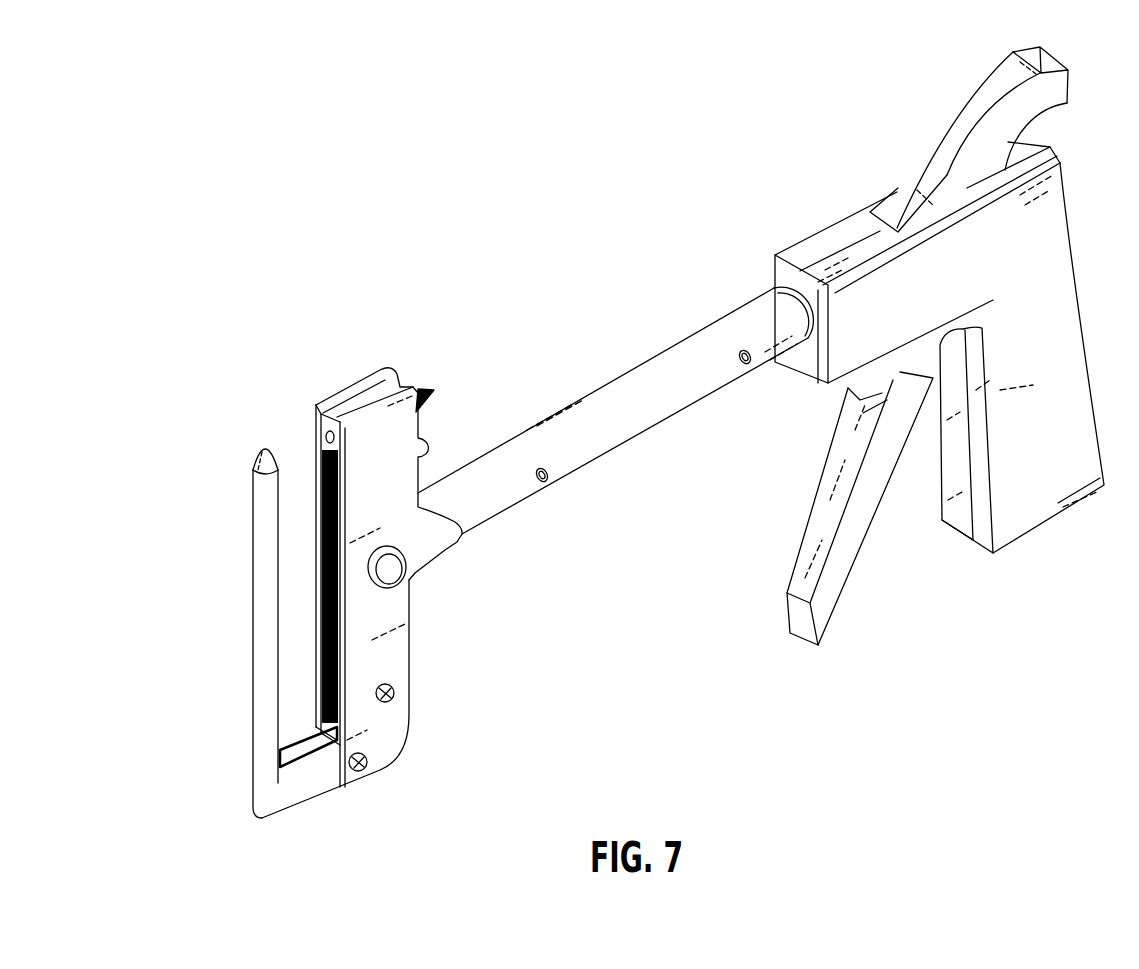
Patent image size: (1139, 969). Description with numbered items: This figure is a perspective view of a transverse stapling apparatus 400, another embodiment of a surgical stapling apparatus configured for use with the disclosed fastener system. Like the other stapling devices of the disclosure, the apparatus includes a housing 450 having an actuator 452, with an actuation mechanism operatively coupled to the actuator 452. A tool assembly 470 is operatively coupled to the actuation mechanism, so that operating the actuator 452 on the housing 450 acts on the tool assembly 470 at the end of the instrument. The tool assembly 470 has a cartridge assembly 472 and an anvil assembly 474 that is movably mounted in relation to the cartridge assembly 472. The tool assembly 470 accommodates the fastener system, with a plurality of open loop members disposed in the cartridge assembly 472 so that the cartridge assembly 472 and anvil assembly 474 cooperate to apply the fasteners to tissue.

The transverse stapling apparatus 400 is at (553, 280).
The housing 450 is at (835, 233).
The actuator 452 is at (845, 567).
The tool assembly 470 is at (277, 403).
The cartridge assembly 472 is at (370, 370).
The anvil assembly 474 is at (252, 584).